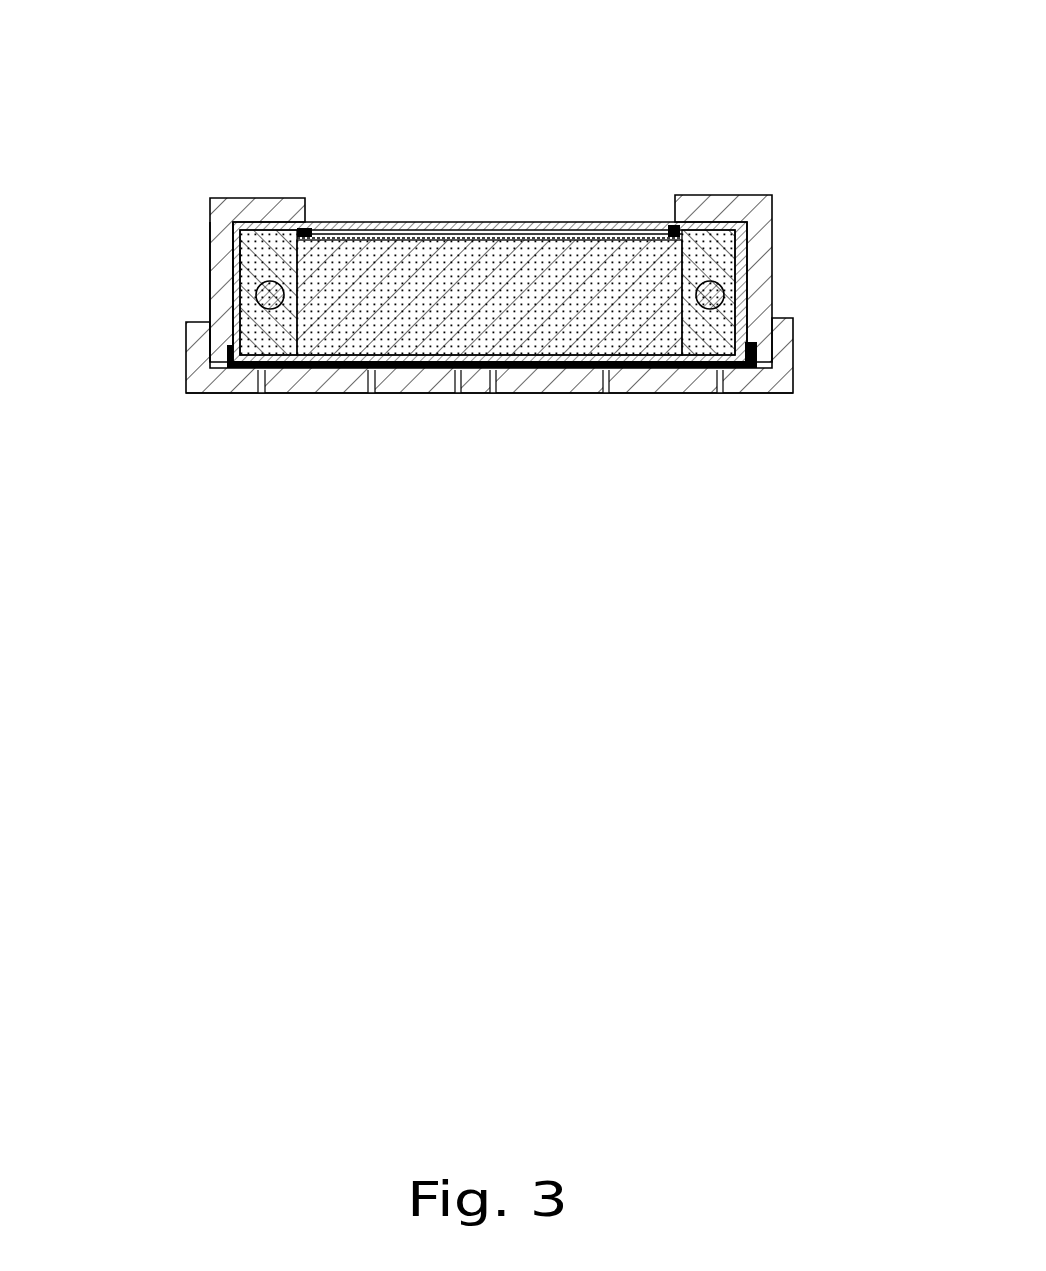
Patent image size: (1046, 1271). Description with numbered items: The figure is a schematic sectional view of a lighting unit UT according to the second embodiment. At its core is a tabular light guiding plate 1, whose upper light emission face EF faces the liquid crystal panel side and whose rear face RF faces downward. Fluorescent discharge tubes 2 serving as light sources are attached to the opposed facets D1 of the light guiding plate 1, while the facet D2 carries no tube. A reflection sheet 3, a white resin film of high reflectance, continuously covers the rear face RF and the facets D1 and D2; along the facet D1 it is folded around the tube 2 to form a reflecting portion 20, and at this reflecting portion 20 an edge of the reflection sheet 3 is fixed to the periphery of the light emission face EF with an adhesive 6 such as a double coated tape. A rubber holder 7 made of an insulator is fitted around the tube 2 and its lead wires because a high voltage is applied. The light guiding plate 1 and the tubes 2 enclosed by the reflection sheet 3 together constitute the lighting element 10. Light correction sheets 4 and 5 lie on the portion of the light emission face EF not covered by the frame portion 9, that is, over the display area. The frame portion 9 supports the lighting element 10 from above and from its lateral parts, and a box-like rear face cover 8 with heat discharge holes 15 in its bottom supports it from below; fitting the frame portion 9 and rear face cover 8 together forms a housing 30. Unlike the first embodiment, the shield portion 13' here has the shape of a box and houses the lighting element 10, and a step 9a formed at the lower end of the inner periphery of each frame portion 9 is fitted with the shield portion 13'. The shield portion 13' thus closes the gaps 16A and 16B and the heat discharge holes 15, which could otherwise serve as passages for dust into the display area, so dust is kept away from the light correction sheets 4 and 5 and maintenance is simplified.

The light guiding plate 1 is at (682, 255).
The fluorescent discharge tube 2 is at (743, 290).
The reflection sheet 3 is at (742, 221).
The light correction sheet 4 is at (467, 226).
The light correction sheet 5 is at (405, 226).
The adhesive 6 is at (670, 224).
The rubber holder 7 is at (811, 344).
The rear face cover 8 is at (163, 292).
The frame portion 9 is at (207, 213).
The step 9a is at (214, 250).
The lighting element 10 is at (578, 225).
The shield portion 13' is at (492, 420).
The heat discharge hole 15 is at (386, 393).
The gap 16A is at (208, 310).
The gap 16B is at (184, 358).
The reflecting portion 20 is at (244, 262).
The housing 30 is at (417, 249).
The facet D1 is at (309, 330).
The facet D2 is at (666, 290).
The light emission face EF is at (525, 222).
The rear face RF is at (493, 357).
The lighting unit UT is at (492, 290).